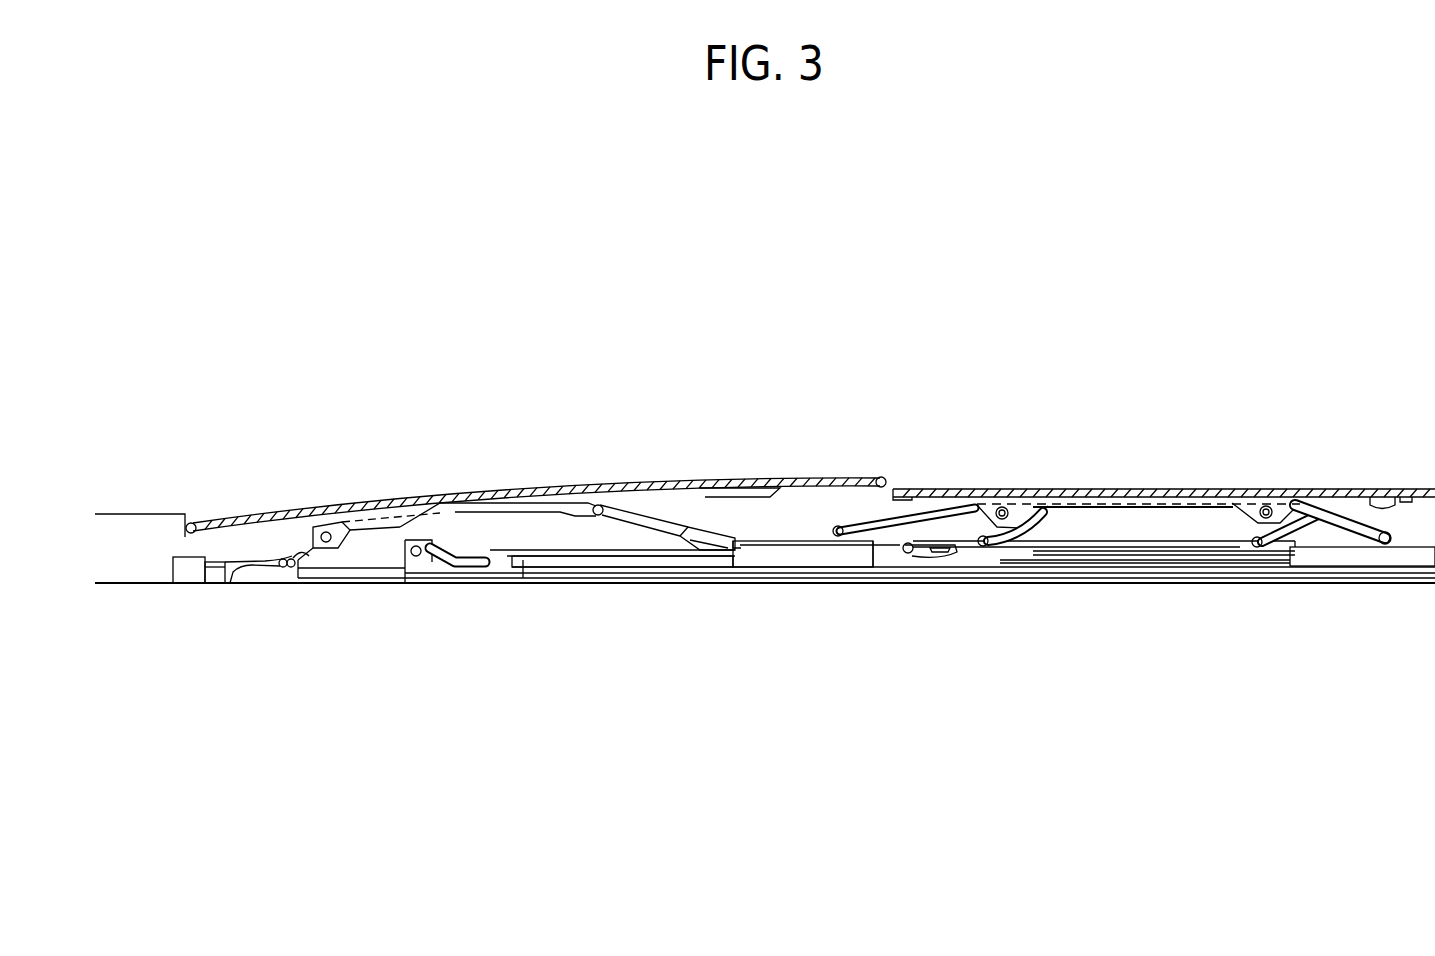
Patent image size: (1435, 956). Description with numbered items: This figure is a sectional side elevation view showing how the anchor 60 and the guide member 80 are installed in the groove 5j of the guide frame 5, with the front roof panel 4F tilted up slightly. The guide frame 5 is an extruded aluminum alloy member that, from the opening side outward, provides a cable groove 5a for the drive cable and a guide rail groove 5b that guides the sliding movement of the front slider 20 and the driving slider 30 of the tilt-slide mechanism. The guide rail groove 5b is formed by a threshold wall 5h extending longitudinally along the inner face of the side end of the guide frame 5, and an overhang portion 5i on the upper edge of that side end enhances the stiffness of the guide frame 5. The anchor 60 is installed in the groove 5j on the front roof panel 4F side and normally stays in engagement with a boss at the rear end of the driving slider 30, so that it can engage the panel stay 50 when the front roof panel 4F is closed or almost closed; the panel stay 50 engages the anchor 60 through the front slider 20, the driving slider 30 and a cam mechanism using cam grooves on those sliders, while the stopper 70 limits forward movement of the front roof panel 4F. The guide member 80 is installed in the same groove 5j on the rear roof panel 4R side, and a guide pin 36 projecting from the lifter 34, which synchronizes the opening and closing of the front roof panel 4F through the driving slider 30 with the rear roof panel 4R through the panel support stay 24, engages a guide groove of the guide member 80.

The front roof panel 4F is at (707, 480).
The rear roof panel 4R is at (1167, 487).
The guide frame 5 is at (1352, 556).
The cable groove 5a is at (1128, 576).
The guide rail groove 5b is at (1017, 572).
The threshold wall 5h is at (830, 569).
The overhang portion 5i is at (866, 545).
The groove 5j is at (783, 558).
The front slider 20 is at (222, 583).
The panel support stay 24 is at (1190, 523).
The driving slider 30 is at (433, 575).
The lifter 34 is at (962, 540).
The guide pin 36 is at (908, 545).
The panel stay 50 is at (630, 528).
The anchor 60 is at (693, 552).
The stopper 70 is at (182, 586).
The guide member 80 is at (897, 557).